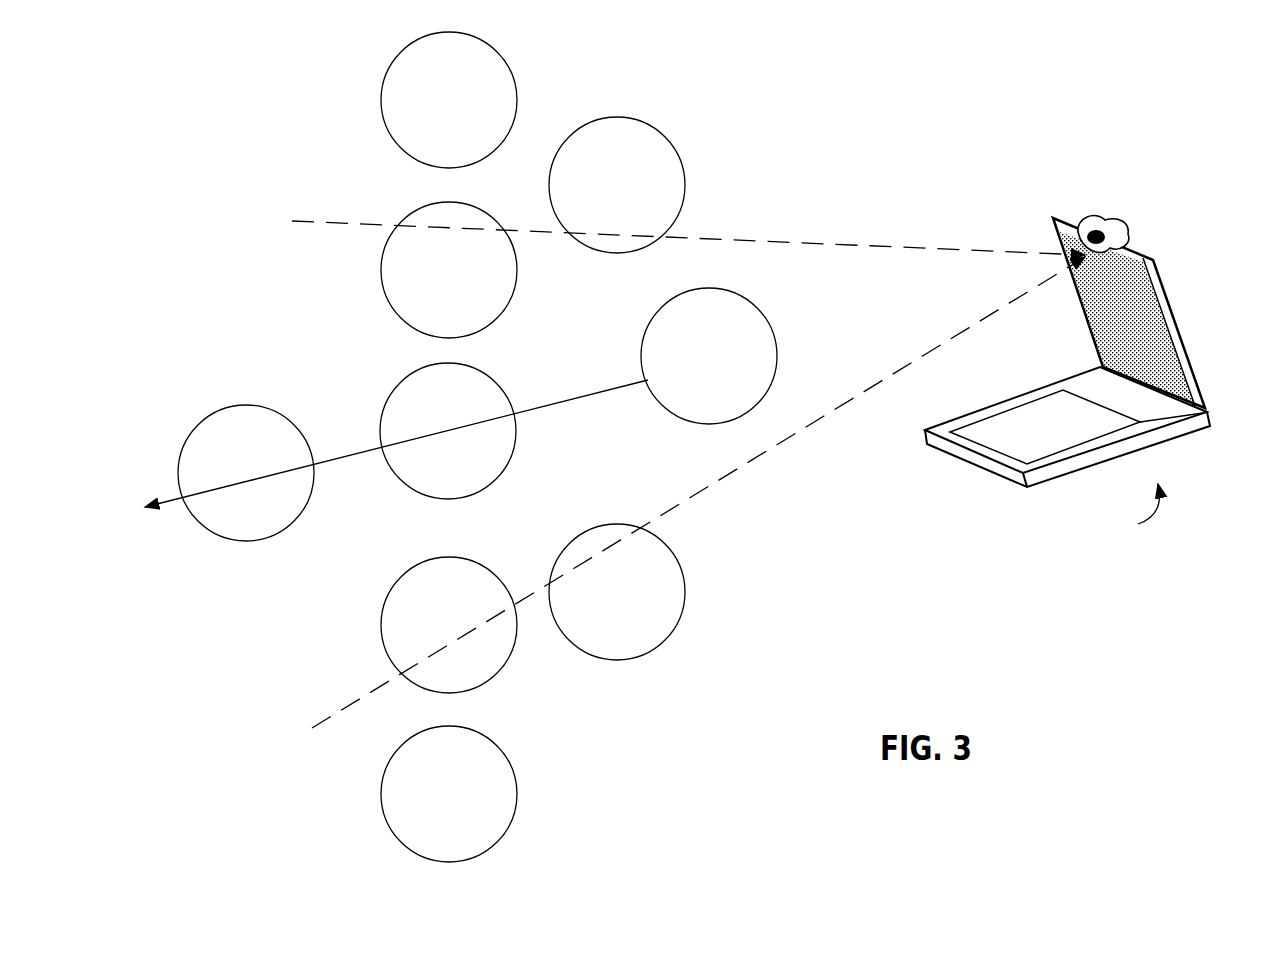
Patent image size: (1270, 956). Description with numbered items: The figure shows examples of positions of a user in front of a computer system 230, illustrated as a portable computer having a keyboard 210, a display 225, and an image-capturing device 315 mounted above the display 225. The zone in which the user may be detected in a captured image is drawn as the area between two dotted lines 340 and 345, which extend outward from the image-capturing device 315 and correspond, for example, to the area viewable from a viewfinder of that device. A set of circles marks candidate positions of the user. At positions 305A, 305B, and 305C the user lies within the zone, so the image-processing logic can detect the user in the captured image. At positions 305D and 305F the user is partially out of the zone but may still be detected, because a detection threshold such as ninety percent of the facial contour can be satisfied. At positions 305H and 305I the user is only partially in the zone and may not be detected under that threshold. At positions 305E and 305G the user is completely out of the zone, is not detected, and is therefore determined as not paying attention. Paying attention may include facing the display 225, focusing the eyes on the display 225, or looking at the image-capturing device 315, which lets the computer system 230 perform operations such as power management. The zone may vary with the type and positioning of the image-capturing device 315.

The user position 305A is at (709, 356).
The user position 305B is at (448, 431).
The user position 305C is at (246, 473).
The user position 305D is at (449, 270).
The user position 305E is at (449, 100).
The user position 305F is at (449, 625).
The user position 305G is at (449, 794).
The user position 305H is at (617, 185).
The user position 305I is at (617, 592).
The dotted line 340 is at (677, 223).
The dotted line 345 is at (688, 508).
The image-capturing device 315 is at (1097, 220).
The display 225 is at (1153, 355).
The keyboard 210 is at (1067, 427).
The computer system 230 is at (1121, 507).